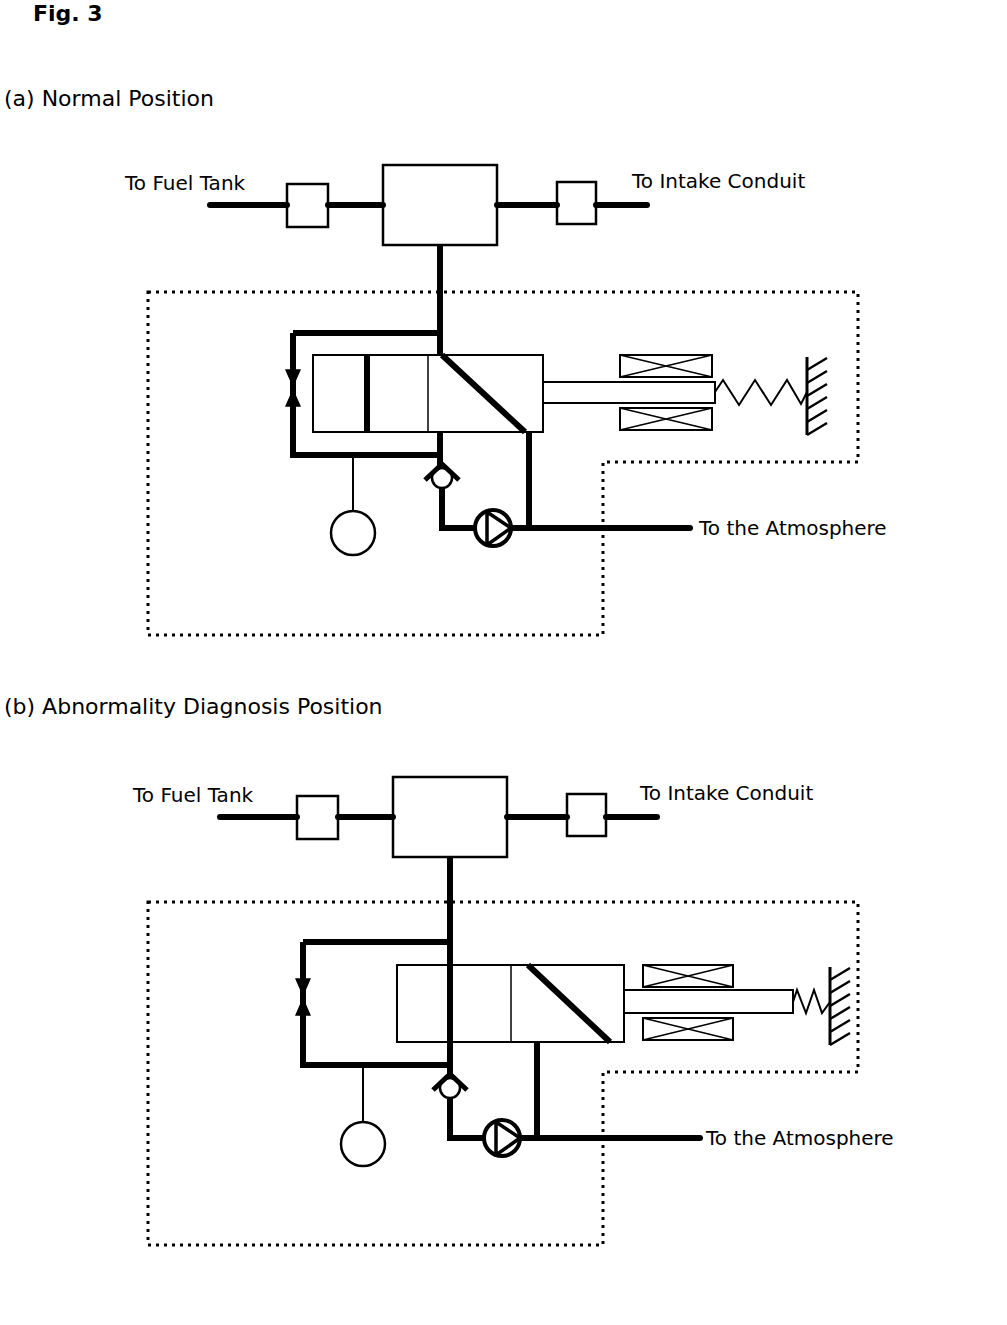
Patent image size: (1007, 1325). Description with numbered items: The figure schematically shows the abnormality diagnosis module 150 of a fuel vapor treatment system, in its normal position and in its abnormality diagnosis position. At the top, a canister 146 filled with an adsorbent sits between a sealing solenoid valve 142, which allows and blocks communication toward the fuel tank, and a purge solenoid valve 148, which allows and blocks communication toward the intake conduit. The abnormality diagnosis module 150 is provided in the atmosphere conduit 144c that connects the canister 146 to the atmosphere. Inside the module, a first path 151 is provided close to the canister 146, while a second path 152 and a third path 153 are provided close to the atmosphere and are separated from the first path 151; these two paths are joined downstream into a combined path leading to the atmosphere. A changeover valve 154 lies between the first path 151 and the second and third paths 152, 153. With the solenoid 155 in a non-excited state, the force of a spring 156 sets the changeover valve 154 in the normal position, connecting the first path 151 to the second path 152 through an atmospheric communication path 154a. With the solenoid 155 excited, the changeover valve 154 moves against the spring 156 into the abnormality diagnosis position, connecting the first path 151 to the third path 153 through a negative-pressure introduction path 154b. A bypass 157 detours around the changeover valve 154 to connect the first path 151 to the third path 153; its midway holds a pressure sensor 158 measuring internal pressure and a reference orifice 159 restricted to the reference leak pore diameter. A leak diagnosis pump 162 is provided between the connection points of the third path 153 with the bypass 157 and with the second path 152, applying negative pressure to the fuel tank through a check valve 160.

The sealing solenoid valve 142 is at (305, 184).
The canister 146 is at (440, 165).
The purge solenoid valve 148 is at (574, 182).
The abnormality diagnosis module 150 is at (623, 298).
The first path 151 is at (437, 302).
The second path 152 is at (531, 472).
The third path 153 is at (448, 444).
The changeover valve 154 is at (505, 355).
The atmospheric communication path 154a is at (455, 358).
The negative-pressure introduction path 154b is at (365, 385).
The solenoid 155 is at (643, 356).
The spring 156 is at (732, 385).
The bypass 157 is at (290, 340).
The reference orifice 159 is at (290, 386).
The pressure sensor 158 is at (330, 535).
The check valve 160 is at (433, 490).
The leak diagnosis pump 162 is at (490, 548).
The atmosphere conduit 144c is at (630, 530).